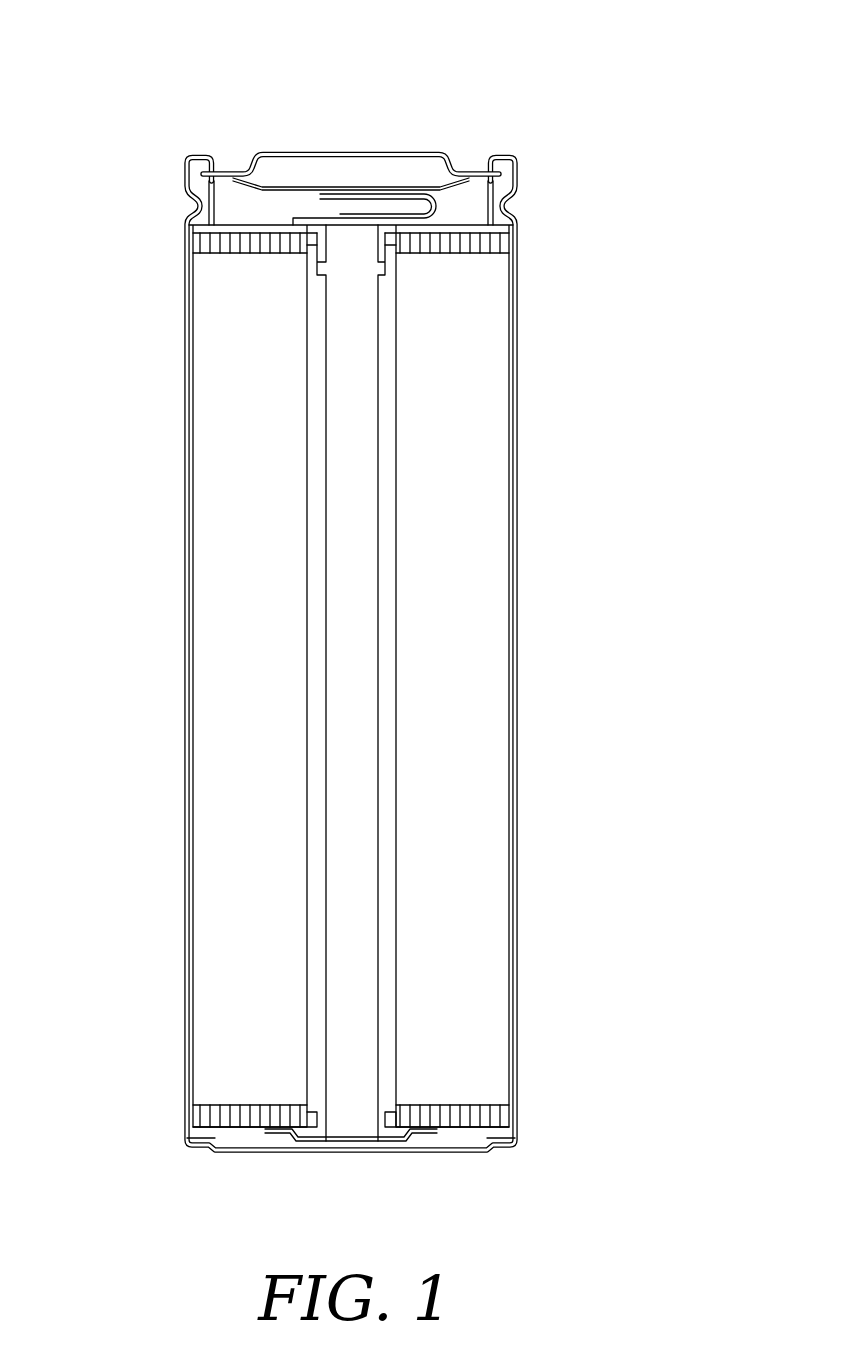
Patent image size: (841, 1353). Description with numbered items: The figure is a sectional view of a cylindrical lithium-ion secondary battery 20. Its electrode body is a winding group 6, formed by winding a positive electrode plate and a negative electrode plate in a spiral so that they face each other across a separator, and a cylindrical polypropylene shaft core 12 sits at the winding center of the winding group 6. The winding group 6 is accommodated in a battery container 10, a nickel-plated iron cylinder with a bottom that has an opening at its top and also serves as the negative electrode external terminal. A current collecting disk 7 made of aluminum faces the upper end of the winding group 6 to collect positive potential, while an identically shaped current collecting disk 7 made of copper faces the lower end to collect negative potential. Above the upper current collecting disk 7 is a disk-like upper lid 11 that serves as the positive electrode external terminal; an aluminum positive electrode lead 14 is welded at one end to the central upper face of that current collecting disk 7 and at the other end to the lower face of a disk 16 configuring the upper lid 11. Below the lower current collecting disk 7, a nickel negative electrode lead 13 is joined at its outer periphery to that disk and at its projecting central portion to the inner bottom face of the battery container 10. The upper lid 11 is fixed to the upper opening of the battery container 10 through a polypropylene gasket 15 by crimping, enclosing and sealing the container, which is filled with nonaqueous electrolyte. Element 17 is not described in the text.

The cylindrical lithium-ion secondary battery 20 is at (318, 88).
The cap-up 17 is at (283, 152).
The disk 16 is at (393, 187).
The upper lid 11 is at (468, 141).
The gasket 15 is at (187, 182).
The positive electrode lead 14 is at (506, 203).
The battery container 10 is at (185, 402).
The current collecting disk 7 is at (213, 227).
The winding group 6 is at (227, 543).
The shaft core 12 is at (313, 717).
The negative electrode lead 13 is at (297, 1132).